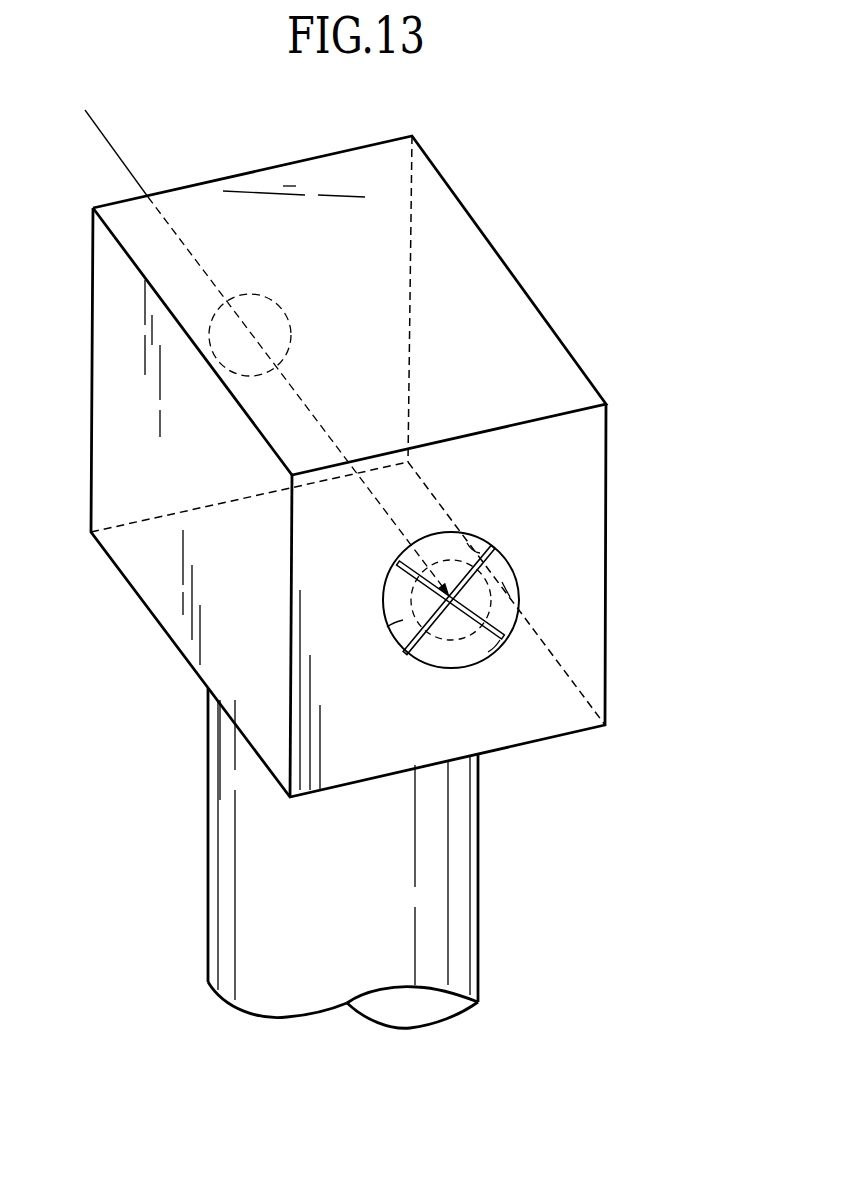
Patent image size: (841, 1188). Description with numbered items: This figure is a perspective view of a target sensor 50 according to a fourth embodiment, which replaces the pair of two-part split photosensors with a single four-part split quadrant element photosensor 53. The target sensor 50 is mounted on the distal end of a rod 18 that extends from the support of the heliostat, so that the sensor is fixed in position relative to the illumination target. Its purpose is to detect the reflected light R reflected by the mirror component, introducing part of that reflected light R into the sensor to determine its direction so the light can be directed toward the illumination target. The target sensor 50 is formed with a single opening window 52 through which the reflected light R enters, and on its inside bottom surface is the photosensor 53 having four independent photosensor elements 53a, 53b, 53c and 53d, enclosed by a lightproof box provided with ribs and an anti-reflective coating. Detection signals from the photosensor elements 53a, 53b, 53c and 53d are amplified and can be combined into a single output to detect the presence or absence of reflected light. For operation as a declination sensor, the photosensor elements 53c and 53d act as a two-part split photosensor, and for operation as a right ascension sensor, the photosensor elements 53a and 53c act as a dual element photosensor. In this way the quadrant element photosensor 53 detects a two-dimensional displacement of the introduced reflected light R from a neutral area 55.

The rod 18 is at (233, 840).
The target sensor 50 is at (497, 252).
The opening window 52 is at (270, 298).
The quadrant element photosensor 53 is at (552, 589).
The photosensor element 53a is at (493, 535).
The photosensor element 53b is at (503, 647).
The photosensor element 53c is at (402, 620).
The photosensor element 53d is at (527, 578).
The neutral area 55 is at (392, 586).
The reflected light R is at (254, 335).